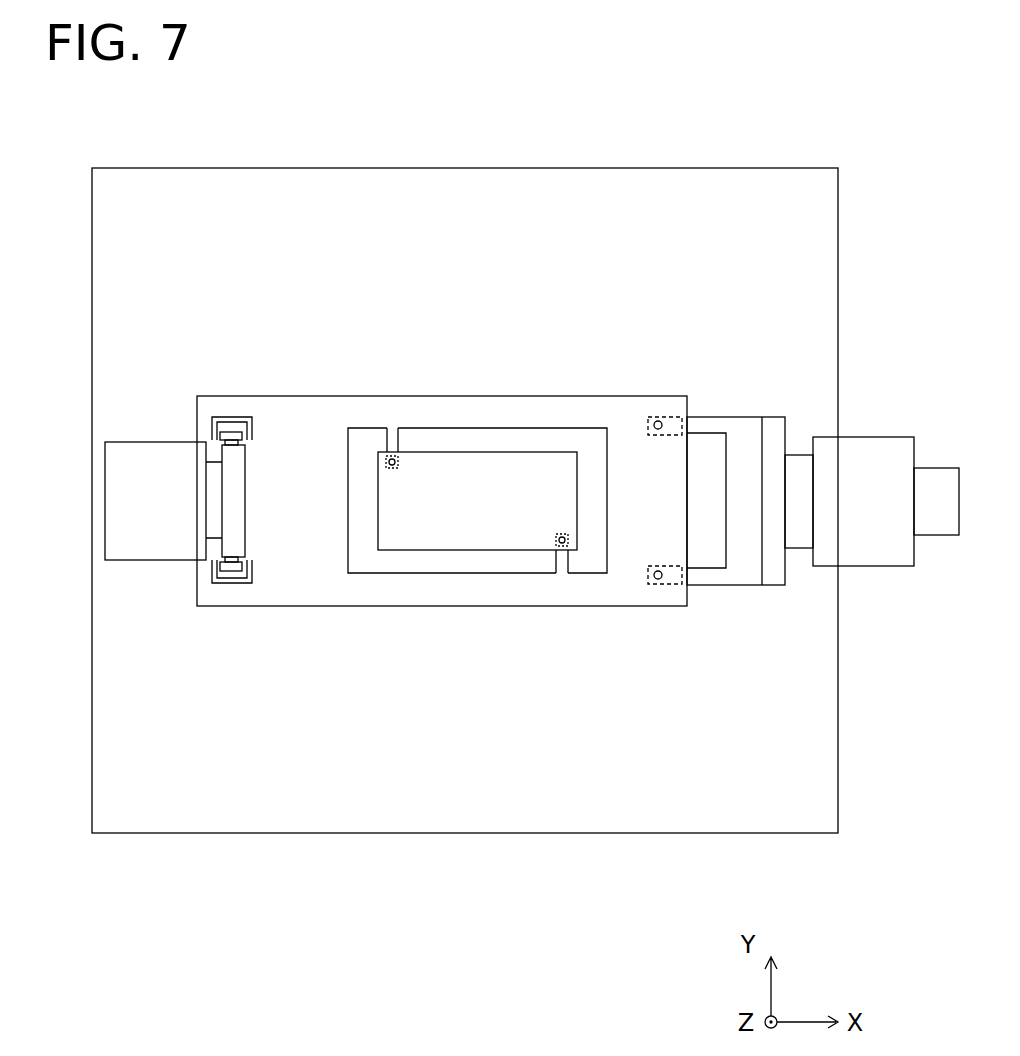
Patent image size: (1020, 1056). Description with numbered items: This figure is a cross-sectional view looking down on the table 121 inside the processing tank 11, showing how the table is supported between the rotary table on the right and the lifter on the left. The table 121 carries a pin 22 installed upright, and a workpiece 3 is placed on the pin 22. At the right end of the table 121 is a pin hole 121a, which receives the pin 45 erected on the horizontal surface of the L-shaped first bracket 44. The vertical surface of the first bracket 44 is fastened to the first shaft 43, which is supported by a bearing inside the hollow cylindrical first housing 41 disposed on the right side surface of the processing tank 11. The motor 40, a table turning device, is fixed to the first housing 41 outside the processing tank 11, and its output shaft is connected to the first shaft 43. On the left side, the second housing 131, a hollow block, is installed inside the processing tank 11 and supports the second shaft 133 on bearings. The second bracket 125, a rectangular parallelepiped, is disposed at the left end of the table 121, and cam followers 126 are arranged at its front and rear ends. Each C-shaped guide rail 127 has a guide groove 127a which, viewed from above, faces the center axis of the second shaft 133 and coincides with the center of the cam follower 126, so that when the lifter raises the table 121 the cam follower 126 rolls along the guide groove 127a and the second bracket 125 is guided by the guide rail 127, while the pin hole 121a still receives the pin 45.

The processing tank 11 is at (720, 168).
The table 121 is at (602, 397).
The pin hole 121a is at (658, 442).
The second housing 131 is at (160, 442).
The second shaft 133 is at (212, 540).
The second bracket 125 is at (245, 495).
The cam follower 126 is at (232, 417).
The guide rail 127 is at (237, 432).
The guide groove 127a is at (240, 574).
The workpiece 3 is at (418, 552).
The pin 22 is at (400, 467).
The pin 45 is at (658, 584).
The first bracket 44 is at (723, 585).
The first shaft 43 is at (804, 559).
The first housing 41 is at (873, 437).
The motor 40 is at (935, 468).